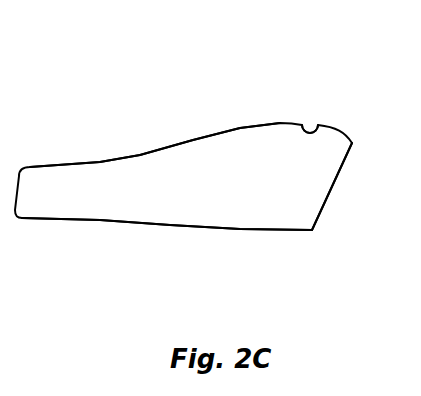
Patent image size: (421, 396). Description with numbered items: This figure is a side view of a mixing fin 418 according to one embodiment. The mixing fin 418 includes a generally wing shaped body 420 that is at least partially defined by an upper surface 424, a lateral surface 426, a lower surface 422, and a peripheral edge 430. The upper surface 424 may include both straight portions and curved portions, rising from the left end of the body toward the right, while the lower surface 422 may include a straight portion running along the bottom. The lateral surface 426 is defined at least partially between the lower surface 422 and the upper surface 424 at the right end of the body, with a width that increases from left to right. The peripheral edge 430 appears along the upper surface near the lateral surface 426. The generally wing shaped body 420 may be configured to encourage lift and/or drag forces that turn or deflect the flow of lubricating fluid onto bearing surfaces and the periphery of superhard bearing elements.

The mixing fin 418 is at (117, 104).
The generally wing shaped body 420 is at (88, 178).
The lower surface 422 is at (170, 228).
The upper surface 424 is at (194, 138).
The lateral surface 426 is at (300, 197).
The peripheral edge 430 is at (318, 125).